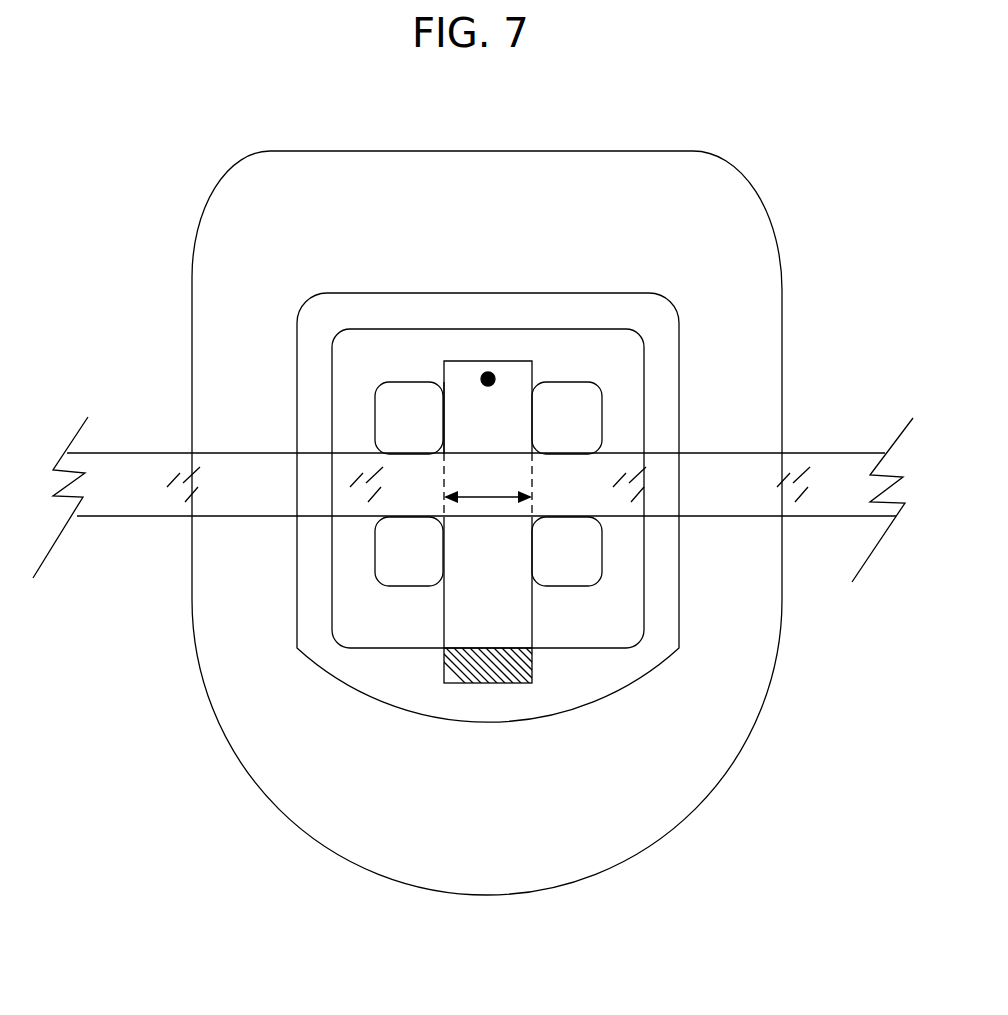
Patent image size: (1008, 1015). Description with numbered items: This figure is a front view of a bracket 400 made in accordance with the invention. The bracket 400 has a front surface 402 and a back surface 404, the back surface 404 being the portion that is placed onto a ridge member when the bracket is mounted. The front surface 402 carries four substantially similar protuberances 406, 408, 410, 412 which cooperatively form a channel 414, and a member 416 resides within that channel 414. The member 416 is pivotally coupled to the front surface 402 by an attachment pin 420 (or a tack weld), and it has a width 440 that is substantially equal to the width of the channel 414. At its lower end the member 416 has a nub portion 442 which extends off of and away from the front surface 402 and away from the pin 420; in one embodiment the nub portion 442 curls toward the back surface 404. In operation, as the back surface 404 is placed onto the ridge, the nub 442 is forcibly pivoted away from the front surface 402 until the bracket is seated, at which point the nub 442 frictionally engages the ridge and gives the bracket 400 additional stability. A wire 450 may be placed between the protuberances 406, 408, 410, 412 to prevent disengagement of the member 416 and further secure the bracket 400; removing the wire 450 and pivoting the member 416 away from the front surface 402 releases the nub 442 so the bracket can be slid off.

The bracket 400 is at (660, 359).
The front surface 402 is at (617, 629).
The back surface 404 is at (580, 328).
The protuberance 406 is at (435, 435).
The protuberance 408 is at (435, 566).
The protuberance 410 is at (592, 563).
The protuberance 412 is at (592, 431).
The channel 414 is at (442, 403).
The member 416 is at (512, 443).
The attachment pin 420 is at (488, 372).
The width 440 is at (490, 503).
The nub portion 442 is at (497, 667).
The wire 450 is at (142, 477).